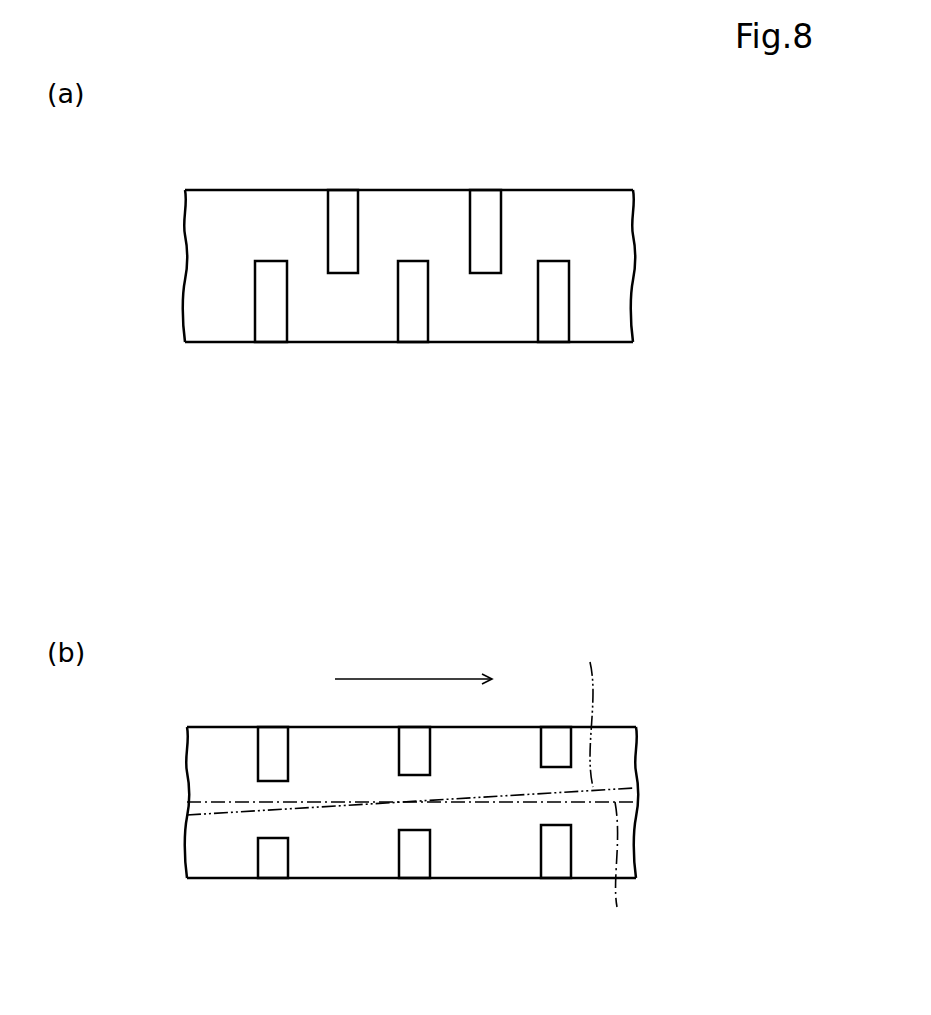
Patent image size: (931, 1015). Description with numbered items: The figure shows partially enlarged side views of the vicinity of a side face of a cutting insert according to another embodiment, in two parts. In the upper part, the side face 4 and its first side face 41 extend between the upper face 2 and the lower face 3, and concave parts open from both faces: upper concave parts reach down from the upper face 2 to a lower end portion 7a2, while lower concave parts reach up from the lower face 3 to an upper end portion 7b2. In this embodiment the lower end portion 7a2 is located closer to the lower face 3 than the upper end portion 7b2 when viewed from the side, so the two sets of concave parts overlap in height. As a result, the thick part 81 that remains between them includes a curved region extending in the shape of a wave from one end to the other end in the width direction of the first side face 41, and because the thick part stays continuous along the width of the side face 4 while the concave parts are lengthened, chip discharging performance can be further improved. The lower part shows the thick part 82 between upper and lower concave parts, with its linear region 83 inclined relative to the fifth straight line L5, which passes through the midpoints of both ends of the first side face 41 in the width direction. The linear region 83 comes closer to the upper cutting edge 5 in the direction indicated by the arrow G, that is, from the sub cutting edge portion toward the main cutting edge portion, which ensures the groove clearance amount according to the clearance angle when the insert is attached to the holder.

The upper face 2 is at (600, 190).
The lower face 3 is at (602, 342).
The side face 4 is at (499, 266).
The first side face 41 is at (499, 534).
The thick part 81 is at (598, 265).
The thick part 82 is at (605, 757).
The lower end portion 7a2 is at (343, 273).
The upper end portion 7b2 is at (270, 261).
The upper cutting edge 5 is at (608, 727).
The linear region 83 is at (588, 709).
The fifth straight line L5 is at (621, 872).
The arrow G is at (413, 664).